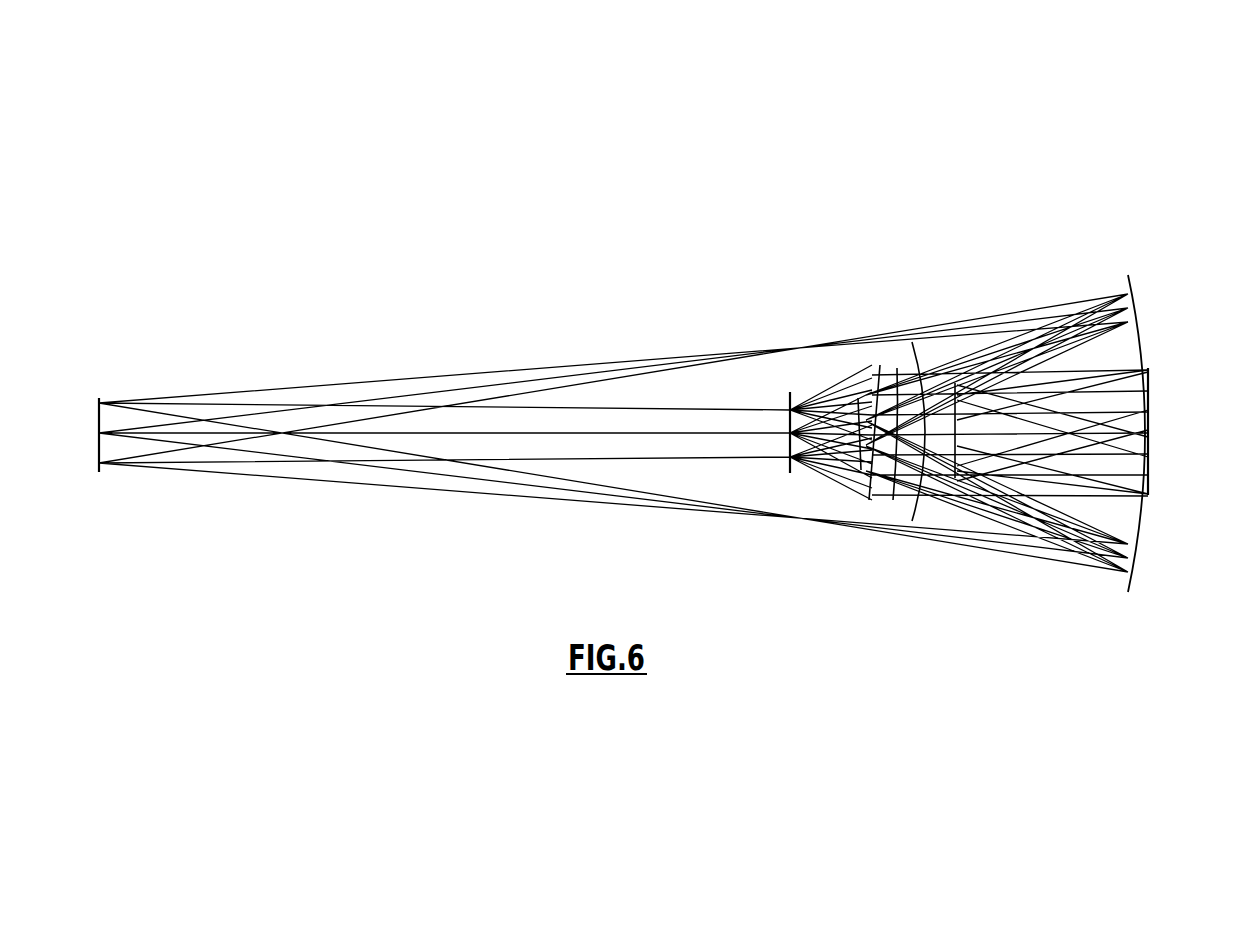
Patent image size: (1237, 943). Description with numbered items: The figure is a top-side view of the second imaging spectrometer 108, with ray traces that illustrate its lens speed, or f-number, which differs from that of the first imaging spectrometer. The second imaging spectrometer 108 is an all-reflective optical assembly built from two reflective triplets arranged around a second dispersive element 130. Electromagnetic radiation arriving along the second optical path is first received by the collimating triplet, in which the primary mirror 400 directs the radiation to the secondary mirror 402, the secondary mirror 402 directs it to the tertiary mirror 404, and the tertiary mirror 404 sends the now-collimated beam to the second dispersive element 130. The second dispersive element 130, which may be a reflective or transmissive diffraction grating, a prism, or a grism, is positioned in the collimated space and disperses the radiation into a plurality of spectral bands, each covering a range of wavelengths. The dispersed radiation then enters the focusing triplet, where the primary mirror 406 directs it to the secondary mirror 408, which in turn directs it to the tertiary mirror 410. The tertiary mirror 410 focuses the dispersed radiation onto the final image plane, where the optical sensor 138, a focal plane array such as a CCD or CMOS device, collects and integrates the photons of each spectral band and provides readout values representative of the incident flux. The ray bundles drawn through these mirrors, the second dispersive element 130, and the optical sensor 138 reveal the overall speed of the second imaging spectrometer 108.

The second imaging spectrometer 108 is at (1115, 113).
The optical sensor 138 is at (788, 402).
The primary mirror 400 is at (1142, 282).
The secondary mirror 402 is at (877, 497).
The tertiary mirror 404 is at (1152, 386).
The primary mirror 406 is at (958, 478).
The secondary mirror 408 is at (858, 398).
The tertiary mirror 410 is at (918, 357).
The second dispersive element 130 is at (894, 500).